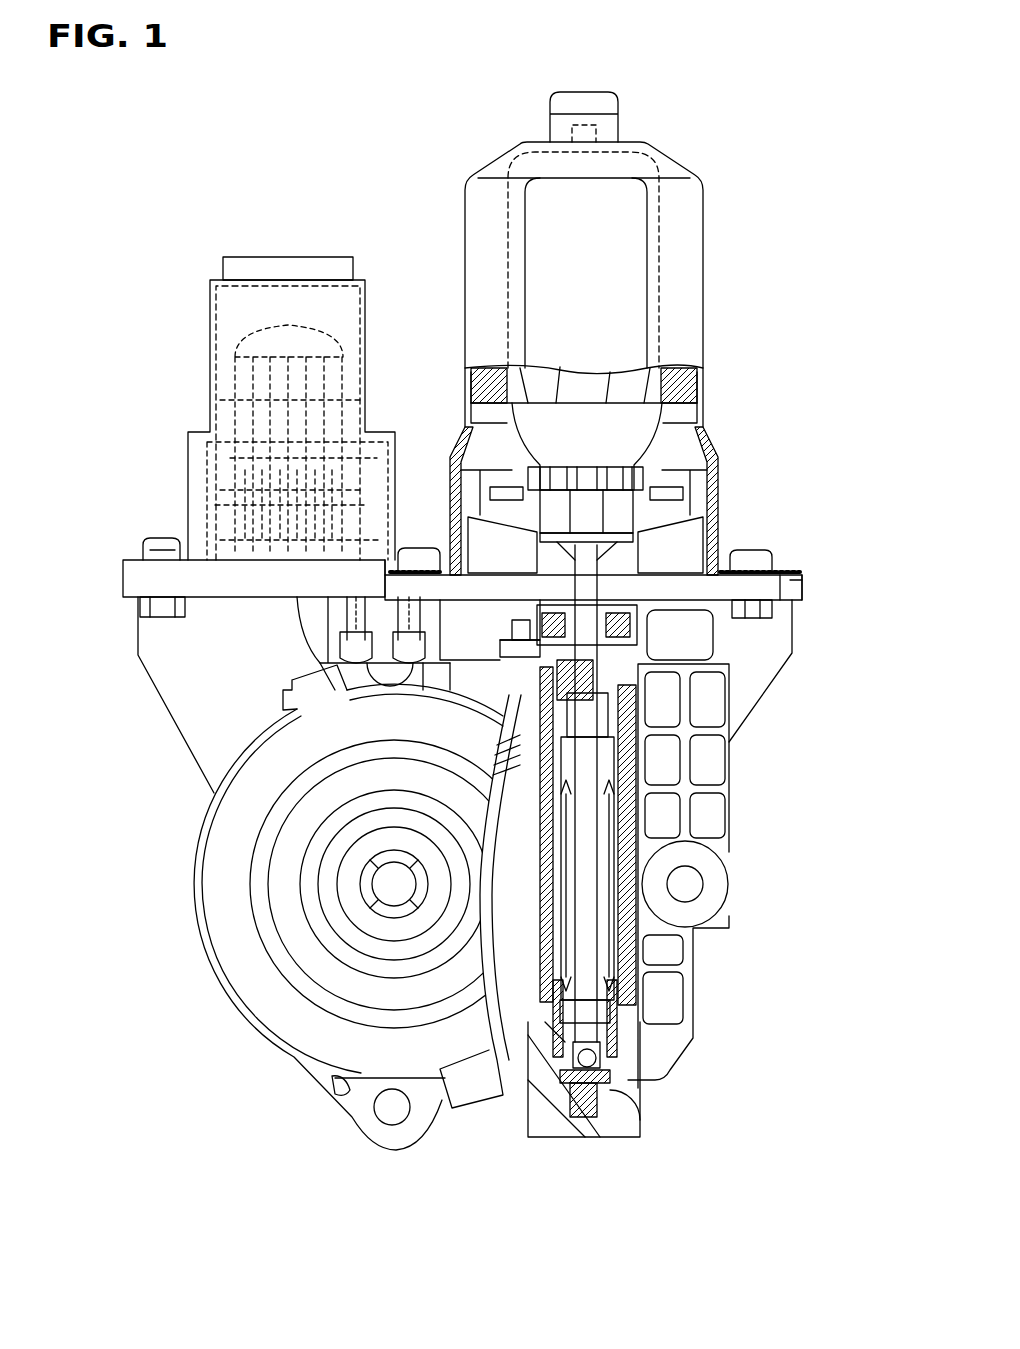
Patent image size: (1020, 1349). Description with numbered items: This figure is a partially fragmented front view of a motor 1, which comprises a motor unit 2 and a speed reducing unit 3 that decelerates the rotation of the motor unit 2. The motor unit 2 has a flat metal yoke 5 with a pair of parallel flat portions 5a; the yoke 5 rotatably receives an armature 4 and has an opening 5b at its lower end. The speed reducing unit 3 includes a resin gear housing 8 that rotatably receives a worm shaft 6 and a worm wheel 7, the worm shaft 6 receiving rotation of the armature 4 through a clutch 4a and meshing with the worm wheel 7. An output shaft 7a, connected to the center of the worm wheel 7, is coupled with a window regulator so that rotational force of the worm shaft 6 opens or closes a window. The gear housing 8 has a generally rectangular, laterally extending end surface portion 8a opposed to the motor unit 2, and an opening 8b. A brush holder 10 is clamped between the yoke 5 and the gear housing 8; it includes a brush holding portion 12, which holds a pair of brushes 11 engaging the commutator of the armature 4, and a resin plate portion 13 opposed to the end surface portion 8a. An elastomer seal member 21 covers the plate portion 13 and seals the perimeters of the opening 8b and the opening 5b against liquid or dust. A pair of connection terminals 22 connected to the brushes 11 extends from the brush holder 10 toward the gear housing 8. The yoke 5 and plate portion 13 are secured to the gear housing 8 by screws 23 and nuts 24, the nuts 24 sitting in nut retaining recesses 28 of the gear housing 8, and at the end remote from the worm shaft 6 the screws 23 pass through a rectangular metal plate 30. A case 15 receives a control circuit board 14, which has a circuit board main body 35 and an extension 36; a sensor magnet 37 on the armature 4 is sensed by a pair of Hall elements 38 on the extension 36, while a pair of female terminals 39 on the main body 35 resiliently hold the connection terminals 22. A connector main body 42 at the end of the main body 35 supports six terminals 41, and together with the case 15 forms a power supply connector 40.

The motor 1 is at (379, 229).
The motor unit 2 is at (691, 156).
The speed reducing unit 3 is at (191, 805).
The armature 4 is at (661, 458).
The clutch 4a is at (630, 632).
The yoke 5 is at (468, 432).
The flat portions 5a is at (640, 215).
The opening of the yoke 5b is at (735, 542).
The worm shaft 6 is at (608, 710).
The worm wheel 7 is at (490, 1008).
The output shaft 7a is at (392, 887).
The gear housing 8 is at (758, 730).
The end surface portion 8a is at (150, 582).
The opening of the gear housing 8b is at (718, 640).
The brush holder 10 is at (480, 510).
The brushes 11 is at (622, 475).
The brush holding portion 12 is at (700, 530).
The plate portion 13 is at (790, 588).
The control circuit board 14 is at (192, 460).
The case 15 is at (392, 337).
The seal member 21 is at (800, 574).
The connection terminals 22 is at (392, 693).
The screws 23 is at (162, 538).
The nuts 24 is at (165, 620).
The nut retaining recesses 28 is at (140, 612).
The rectangular metal plate 30 is at (142, 553).
The circuit board main body 35 is at (205, 485).
The extension 36 is at (478, 605).
The sensor magnet 37 is at (512, 622).
The Hall elements 38 is at (662, 605).
The female terminals 39 is at (400, 655).
The power supply connector 40 is at (225, 268).
The terminals 41 is at (289, 419).
The connector main body 42 is at (215, 405).